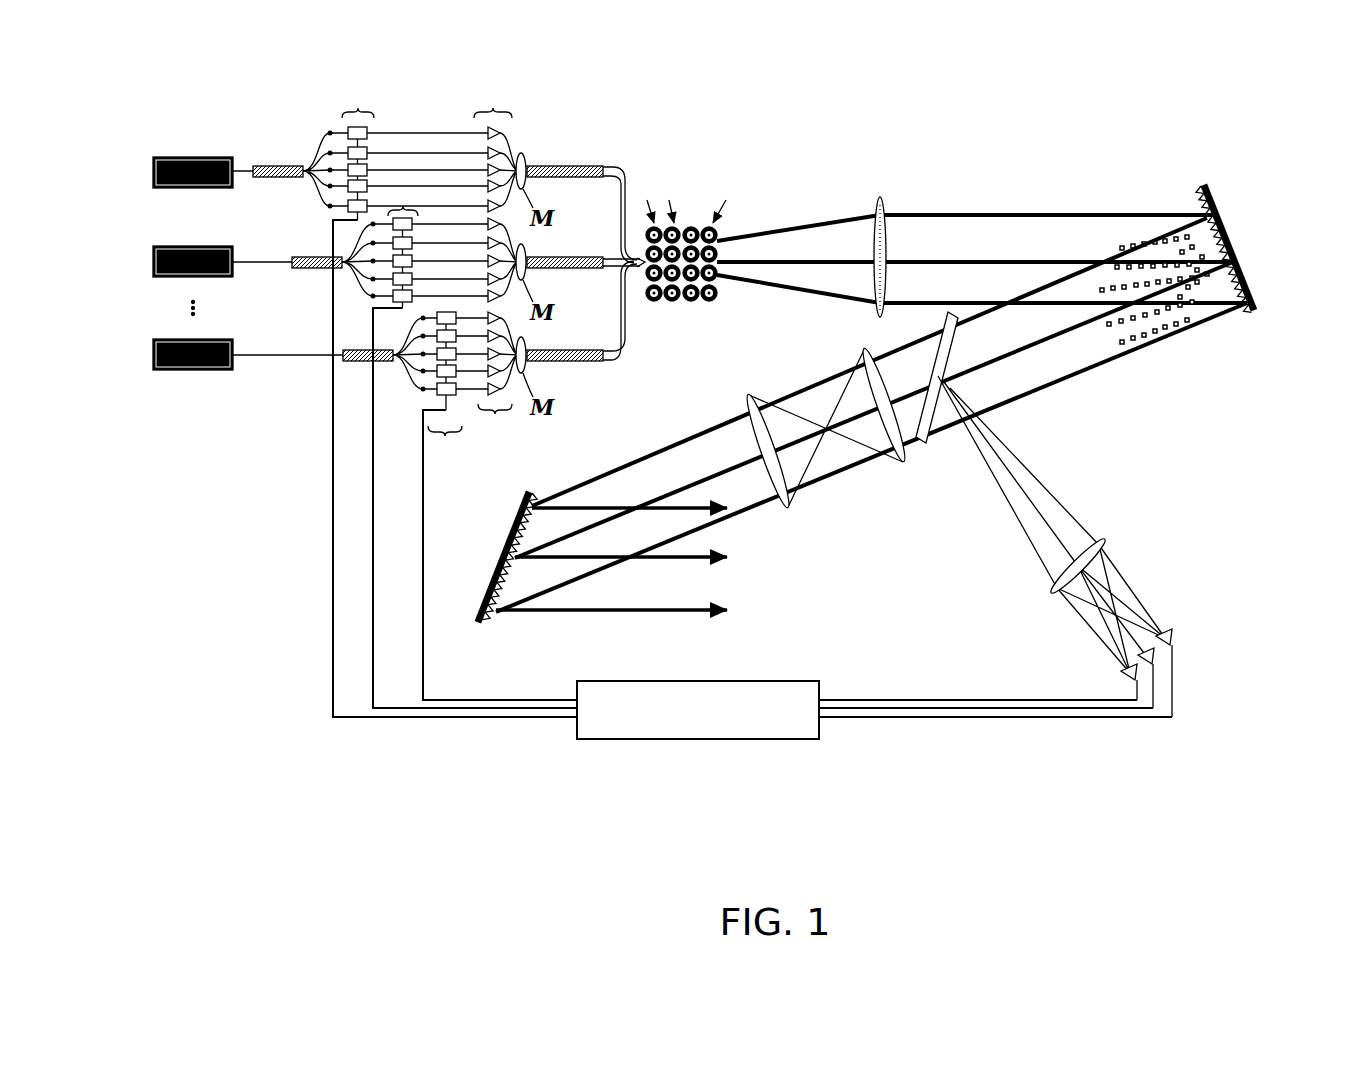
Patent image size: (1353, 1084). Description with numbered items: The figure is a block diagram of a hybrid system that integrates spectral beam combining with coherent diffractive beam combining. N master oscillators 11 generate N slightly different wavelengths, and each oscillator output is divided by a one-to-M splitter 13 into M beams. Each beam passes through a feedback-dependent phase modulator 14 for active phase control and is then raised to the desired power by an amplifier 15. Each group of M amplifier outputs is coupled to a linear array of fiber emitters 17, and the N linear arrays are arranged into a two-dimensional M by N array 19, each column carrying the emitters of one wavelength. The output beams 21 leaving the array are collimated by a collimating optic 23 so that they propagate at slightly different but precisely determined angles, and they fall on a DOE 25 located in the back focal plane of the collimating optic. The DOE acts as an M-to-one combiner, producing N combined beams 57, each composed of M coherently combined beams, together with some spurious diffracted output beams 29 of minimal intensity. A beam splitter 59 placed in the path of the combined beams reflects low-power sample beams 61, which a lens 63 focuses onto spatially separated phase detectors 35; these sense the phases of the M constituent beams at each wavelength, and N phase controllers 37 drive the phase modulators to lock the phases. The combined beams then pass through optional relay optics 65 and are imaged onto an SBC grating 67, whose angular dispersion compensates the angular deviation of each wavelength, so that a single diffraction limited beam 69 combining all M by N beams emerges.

The master oscillators 11 is at (150, 127).
The 1:M splitters 13 is at (268, 178).
The phase modulators 14 is at (403, 206).
The amplifiers 15 is at (493, 108).
The fiber emitters 17 is at (591, 165).
The M×N array 19 is at (646, 310).
The output beams 21 is at (792, 206).
The collimating optic 23 is at (880, 197).
The DOE 25 is at (1200, 185).
The spurious diffracted output beams 29 is at (1135, 275).
The phase detectors 35 is at (1188, 630).
The phase controllers 37 is at (728, 740).
The combined beams 57 is at (1073, 393).
The beam splitter 59 is at (932, 440).
The sample beams 61 is at (993, 513).
The lens 63 is at (1090, 545).
The relay optics 65 is at (907, 473).
The SBC grating 67 is at (500, 548).
The single diffraction limited beam 69 is at (766, 590).